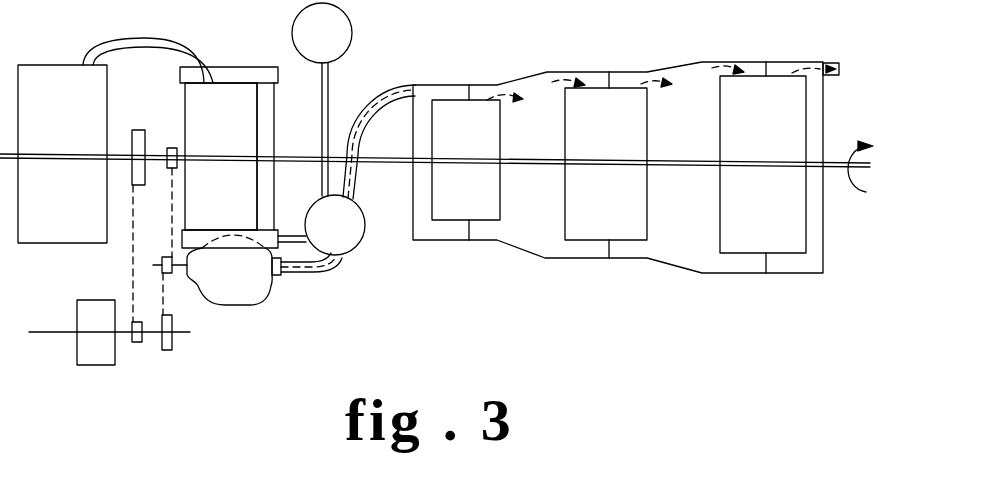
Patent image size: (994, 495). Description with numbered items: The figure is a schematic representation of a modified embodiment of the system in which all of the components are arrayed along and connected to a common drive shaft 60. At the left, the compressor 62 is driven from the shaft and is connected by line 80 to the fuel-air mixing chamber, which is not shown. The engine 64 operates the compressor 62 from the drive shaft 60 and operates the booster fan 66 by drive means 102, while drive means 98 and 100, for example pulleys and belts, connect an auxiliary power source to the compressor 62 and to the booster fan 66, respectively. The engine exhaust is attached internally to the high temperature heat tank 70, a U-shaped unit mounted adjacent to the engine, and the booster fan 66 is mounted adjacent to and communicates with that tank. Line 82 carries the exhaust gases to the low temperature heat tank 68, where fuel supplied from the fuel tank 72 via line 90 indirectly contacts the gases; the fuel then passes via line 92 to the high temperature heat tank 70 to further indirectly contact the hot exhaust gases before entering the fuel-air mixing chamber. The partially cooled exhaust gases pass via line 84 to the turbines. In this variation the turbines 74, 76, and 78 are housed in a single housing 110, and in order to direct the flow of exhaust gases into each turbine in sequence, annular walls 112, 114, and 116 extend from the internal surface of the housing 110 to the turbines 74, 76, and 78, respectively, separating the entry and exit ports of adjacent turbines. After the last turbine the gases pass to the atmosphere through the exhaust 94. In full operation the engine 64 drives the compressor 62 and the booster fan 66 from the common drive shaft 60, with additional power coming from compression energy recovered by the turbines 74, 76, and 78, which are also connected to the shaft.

The drive shaft 60 is at (833, 163).
The compressor 62 is at (56, 65).
The engine 64 is at (138, 133).
The booster fan 66 is at (264, 298).
The low temperature heat tank 68 is at (362, 210).
The high temperature heat tank 70 is at (239, 67).
The fuel tank 72 is at (352, 27).
The turbine 74 is at (514, 114).
The turbine 76 is at (691, 143).
The turbine 78 is at (648, 92).
The line 80 is at (148, 38).
The line 82 is at (329, 273).
The line 84 is at (386, 110).
The line 90 is at (329, 89).
The line 92 is at (295, 236).
The exhaust 94 is at (832, 63).
The drive means 98 is at (132, 273).
The drive means 100 is at (163, 292).
The drive means 102 is at (171, 222).
The housing 110 is at (681, 62).
The annular wall 112 is at (469, 85).
The annular wall 114 is at (609, 72).
The annular wall 116 is at (768, 73).